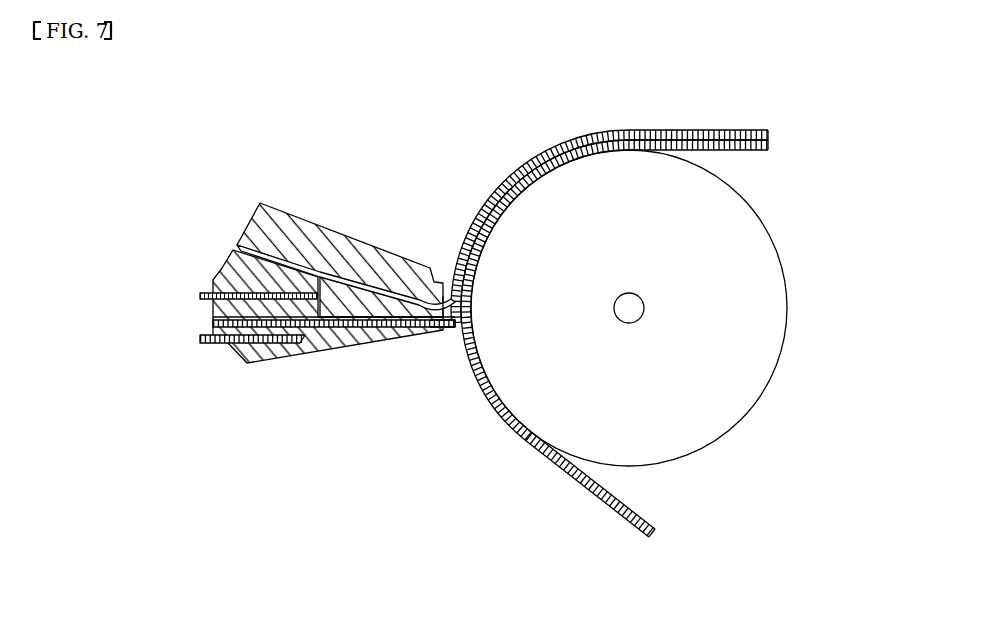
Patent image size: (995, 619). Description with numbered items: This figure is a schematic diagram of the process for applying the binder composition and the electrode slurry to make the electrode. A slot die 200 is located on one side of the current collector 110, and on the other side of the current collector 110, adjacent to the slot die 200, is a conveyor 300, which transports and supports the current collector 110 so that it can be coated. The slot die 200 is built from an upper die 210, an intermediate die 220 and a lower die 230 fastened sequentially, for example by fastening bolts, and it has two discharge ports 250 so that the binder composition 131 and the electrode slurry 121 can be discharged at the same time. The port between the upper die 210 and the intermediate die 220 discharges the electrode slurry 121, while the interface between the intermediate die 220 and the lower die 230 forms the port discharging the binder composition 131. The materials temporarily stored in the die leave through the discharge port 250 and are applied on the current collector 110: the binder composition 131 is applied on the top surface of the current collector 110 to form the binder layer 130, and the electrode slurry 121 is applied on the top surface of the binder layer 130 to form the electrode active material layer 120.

The current collector 110 is at (523, 437).
The electrode active material layer 120 is at (768, 132).
The electrode slurry 121 is at (200, 294).
The binder layer 130 is at (768, 148).
The binder composition 131 is at (200, 340).
The slot die 200 is at (281, 273).
The upper die 210 is at (333, 235).
The intermediate die 220 is at (225, 268).
The lower die 230 is at (283, 355).
The discharge port 250 is at (440, 332).
The conveyor 300 is at (752, 408).